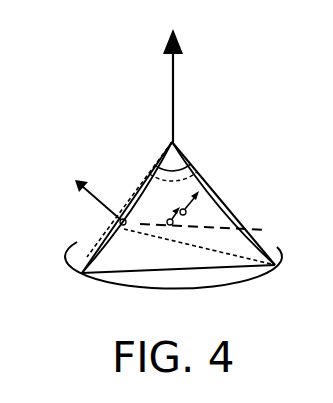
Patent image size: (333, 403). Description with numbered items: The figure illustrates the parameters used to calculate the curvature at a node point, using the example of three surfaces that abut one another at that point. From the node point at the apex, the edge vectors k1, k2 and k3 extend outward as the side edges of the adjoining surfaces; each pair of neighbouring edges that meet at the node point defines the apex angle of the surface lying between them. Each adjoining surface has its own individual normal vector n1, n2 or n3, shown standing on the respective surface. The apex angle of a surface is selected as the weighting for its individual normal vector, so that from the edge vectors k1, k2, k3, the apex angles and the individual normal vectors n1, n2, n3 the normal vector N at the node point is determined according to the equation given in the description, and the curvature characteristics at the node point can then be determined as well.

The normal vector N is at (160, 86).
The edge vector k1 is at (103, 238).
The edge vector k2 is at (258, 240).
The edge vector k3 is at (127, 183).
The individual normal vector n1 is at (160, 212).
The individual normal vector n2 is at (100, 199).
The individual normal vector n3 is at (201, 208).